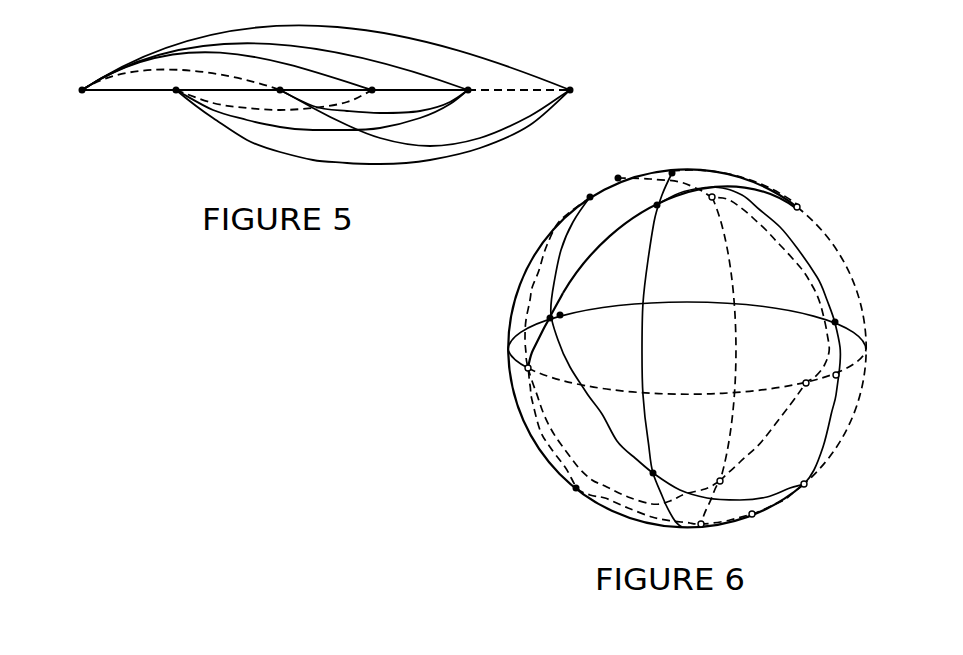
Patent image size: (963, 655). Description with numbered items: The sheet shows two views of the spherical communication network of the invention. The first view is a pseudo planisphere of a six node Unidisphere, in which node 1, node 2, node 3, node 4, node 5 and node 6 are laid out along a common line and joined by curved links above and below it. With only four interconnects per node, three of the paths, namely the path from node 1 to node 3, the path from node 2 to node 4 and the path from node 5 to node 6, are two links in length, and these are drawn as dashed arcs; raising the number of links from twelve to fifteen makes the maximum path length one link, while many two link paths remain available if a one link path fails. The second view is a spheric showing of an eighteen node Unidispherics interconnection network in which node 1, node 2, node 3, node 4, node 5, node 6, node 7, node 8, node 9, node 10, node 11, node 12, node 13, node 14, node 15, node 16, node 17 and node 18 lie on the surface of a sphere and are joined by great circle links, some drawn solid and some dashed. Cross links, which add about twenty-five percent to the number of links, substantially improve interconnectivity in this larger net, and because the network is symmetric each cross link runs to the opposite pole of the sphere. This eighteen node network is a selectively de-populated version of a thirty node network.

In FIG. 5, the node 1 is at (81, 91).
In FIG. 6, the node 1 is at (674, 171).
In FIG. 5, the node 2 is at (175, 91).
In FIG. 6, the node 2 is at (656, 204).
In FIG. 5, the node 3 is at (279, 89).
In FIG. 6, the node 3 is at (655, 472).
In FIG. 5, the node 4 is at (373, 89).
In FIG. 6, the node 4 is at (699, 527).
In FIG. 5, the node 5 is at (469, 92).
In FIG. 6, the node 5 is at (722, 483).
In FIG. 5, the node 6 is at (571, 89).
In FIG. 6, the node 6 is at (711, 199).
In FIG. 6, the node 7 is at (551, 316).
In FIG. 6, the node 8 is at (561, 318).
In FIG. 6, the node 9 is at (836, 322).
In FIG. 6, the node 10 is at (836, 377).
In FIG. 6, the node 11 is at (805, 382).
In FIG. 6, the node 12 is at (527, 369).
In FIG. 6, the node 13 is at (589, 196).
In FIG. 6, the node 14 is at (753, 516).
In FIG. 6, the node 15 is at (798, 206).
In FIG. 6, the node 16 is at (619, 177).
In FIG. 6, the node 17 is at (575, 489).
In FIG. 6, the node 18 is at (806, 486).